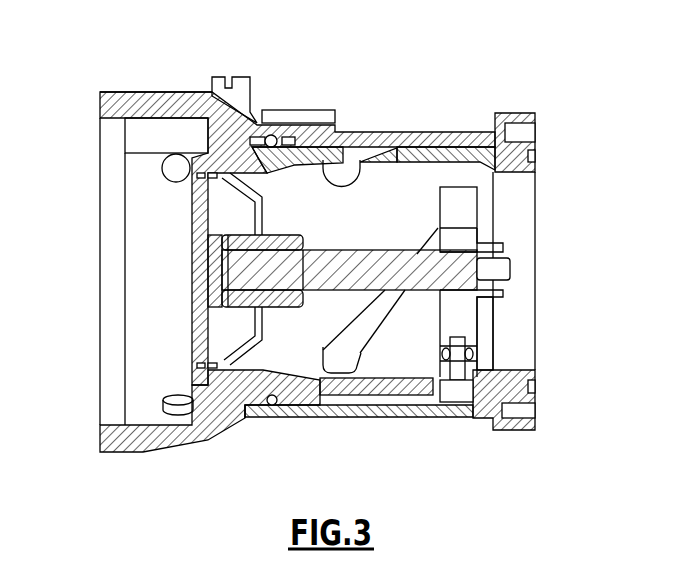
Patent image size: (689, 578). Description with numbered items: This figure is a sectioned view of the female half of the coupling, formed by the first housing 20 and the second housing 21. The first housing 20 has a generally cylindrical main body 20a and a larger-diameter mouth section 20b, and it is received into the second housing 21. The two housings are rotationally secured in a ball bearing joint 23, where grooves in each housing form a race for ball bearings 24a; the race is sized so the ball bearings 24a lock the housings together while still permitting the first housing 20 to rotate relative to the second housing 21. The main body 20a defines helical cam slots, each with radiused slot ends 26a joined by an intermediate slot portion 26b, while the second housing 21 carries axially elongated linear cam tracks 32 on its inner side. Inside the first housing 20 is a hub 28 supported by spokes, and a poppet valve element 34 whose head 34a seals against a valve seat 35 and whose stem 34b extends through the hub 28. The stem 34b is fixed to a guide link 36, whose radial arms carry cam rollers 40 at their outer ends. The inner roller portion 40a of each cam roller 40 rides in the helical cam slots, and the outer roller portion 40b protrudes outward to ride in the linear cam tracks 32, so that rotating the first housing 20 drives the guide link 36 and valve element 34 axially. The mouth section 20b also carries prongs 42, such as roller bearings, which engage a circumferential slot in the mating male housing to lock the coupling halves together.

The first housing 20 is at (205, 440).
The main body 20a is at (430, 165).
The mouth section 20b is at (160, 82).
The second housing 21 is at (370, 417).
The ball bearing joint 23 is at (258, 426).
The ball bearings 24a is at (280, 410).
The radiused slot ends 26a is at (350, 160).
The intermediate slot portion 26b is at (370, 318).
The hub 28 is at (243, 308).
The linear cam tracks 32 is at (353, 398).
The valve element 34 is at (384, 240).
The head 34a is at (200, 243).
The stem 34b is at (353, 252).
The valve seat 35 is at (203, 360).
The guide link 36 is at (480, 320).
The cam rollers 40 is at (435, 414).
The inner roller portion 40a is at (470, 377).
The outer roller portion 40b is at (470, 412).
The prongs 42 is at (165, 175).